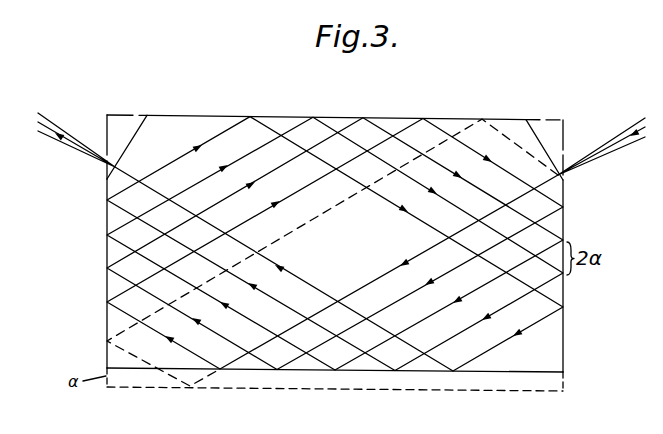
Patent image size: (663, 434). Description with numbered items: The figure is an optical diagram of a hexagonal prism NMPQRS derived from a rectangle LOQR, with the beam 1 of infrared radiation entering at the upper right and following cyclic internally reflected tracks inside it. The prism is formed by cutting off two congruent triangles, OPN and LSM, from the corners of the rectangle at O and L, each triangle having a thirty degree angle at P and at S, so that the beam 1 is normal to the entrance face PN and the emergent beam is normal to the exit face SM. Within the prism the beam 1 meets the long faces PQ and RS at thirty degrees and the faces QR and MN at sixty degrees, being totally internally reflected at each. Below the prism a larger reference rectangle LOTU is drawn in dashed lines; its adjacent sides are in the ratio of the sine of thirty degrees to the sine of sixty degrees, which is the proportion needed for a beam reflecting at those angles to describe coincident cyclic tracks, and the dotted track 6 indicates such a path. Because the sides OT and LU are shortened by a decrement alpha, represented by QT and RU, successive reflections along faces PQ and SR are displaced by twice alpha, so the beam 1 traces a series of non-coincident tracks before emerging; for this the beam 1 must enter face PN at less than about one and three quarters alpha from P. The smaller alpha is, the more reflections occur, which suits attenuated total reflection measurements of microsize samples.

The beam 1 is at (617, 136).
The track 6 is at (107, 342).
The corner L of rectangle LOQR L is at (117, 139).
The vertex M of prism M is at (132, 138).
The vertex N of prism N is at (541, 139).
The corner O of rectangle LOQR O is at (552, 140).
The vertex S of prism S is at (100, 180).
The vertex P of prism P is at (572, 276).
The corner Q of prism Q is at (343, 374).
The corner R of prism R is at (98, 371).
The corner U of rectangle LOTU U is at (327, 393).
The corner T of rectangle LOTU T is at (569, 388).